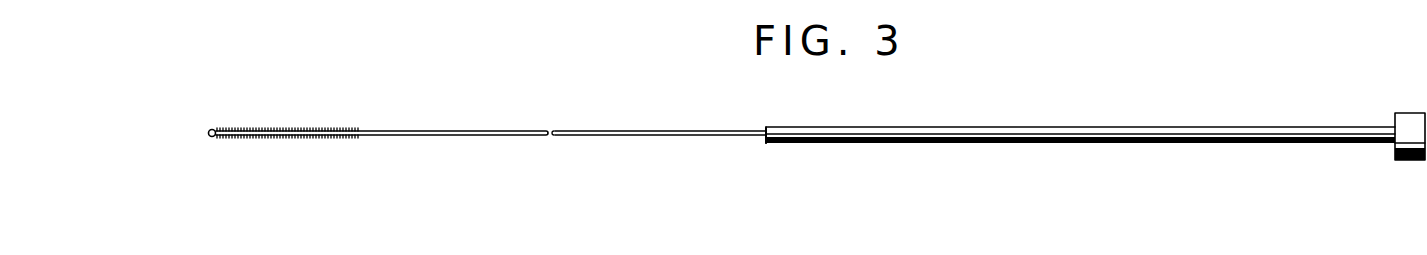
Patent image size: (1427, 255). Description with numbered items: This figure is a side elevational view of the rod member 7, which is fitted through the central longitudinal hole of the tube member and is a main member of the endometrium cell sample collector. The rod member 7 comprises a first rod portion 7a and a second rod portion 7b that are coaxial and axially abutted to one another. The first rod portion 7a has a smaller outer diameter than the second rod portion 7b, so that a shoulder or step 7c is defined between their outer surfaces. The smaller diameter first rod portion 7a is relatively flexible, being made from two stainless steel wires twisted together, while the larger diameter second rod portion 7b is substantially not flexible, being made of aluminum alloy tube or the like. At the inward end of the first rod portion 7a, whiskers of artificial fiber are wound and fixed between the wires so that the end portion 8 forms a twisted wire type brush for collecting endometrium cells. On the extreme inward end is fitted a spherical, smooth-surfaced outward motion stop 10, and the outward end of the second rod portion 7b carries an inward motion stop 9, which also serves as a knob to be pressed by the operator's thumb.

The rod member 7 is at (768, 120).
The first rod portion 7a is at (441, 137).
The second rod portion 7b is at (908, 136).
The shoulder or step 7c is at (766, 140).
The end portion 8 is at (301, 139).
The inward motion stop 9 is at (1405, 122).
The outward motion stop 10 is at (213, 129).